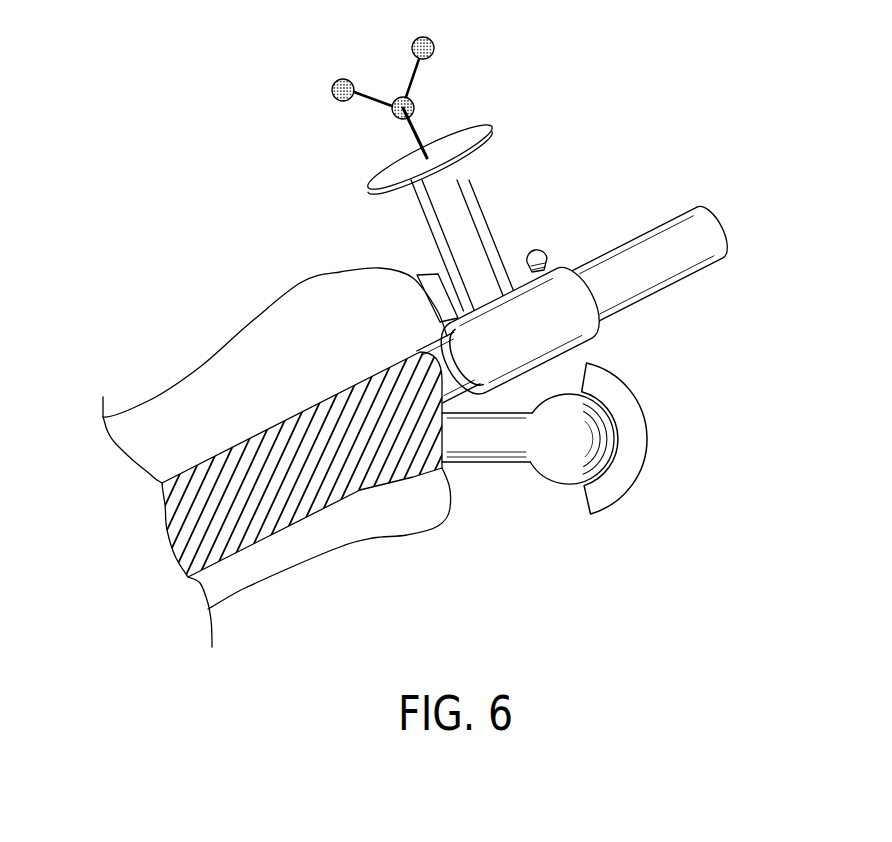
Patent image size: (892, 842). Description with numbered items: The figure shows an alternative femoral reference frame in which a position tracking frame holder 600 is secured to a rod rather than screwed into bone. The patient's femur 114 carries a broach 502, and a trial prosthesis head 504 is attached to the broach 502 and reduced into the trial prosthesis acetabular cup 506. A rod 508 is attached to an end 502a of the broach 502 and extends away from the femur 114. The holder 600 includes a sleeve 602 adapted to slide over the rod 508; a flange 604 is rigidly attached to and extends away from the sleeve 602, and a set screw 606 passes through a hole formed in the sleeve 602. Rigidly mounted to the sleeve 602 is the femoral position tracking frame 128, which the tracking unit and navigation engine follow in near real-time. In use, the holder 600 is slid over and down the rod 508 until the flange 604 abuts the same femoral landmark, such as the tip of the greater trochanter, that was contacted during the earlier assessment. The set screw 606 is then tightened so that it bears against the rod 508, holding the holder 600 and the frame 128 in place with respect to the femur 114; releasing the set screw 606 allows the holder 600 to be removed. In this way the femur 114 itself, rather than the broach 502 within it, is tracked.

The femur 114 is at (146, 397).
The femoral position tracking frame 128 is at (434, 97).
The broach 502 is at (250, 425).
The end of the broach 502a is at (418, 353).
The trial prosthesis head 504 is at (495, 464).
The trial prosthesis acetabular cup 506 is at (620, 498).
The rod 508 is at (660, 222).
The position tracking frame holder 600 is at (520, 247).
The sleeve 602 is at (592, 343).
The flange 604 is at (420, 275).
The set screw 606 is at (549, 258).